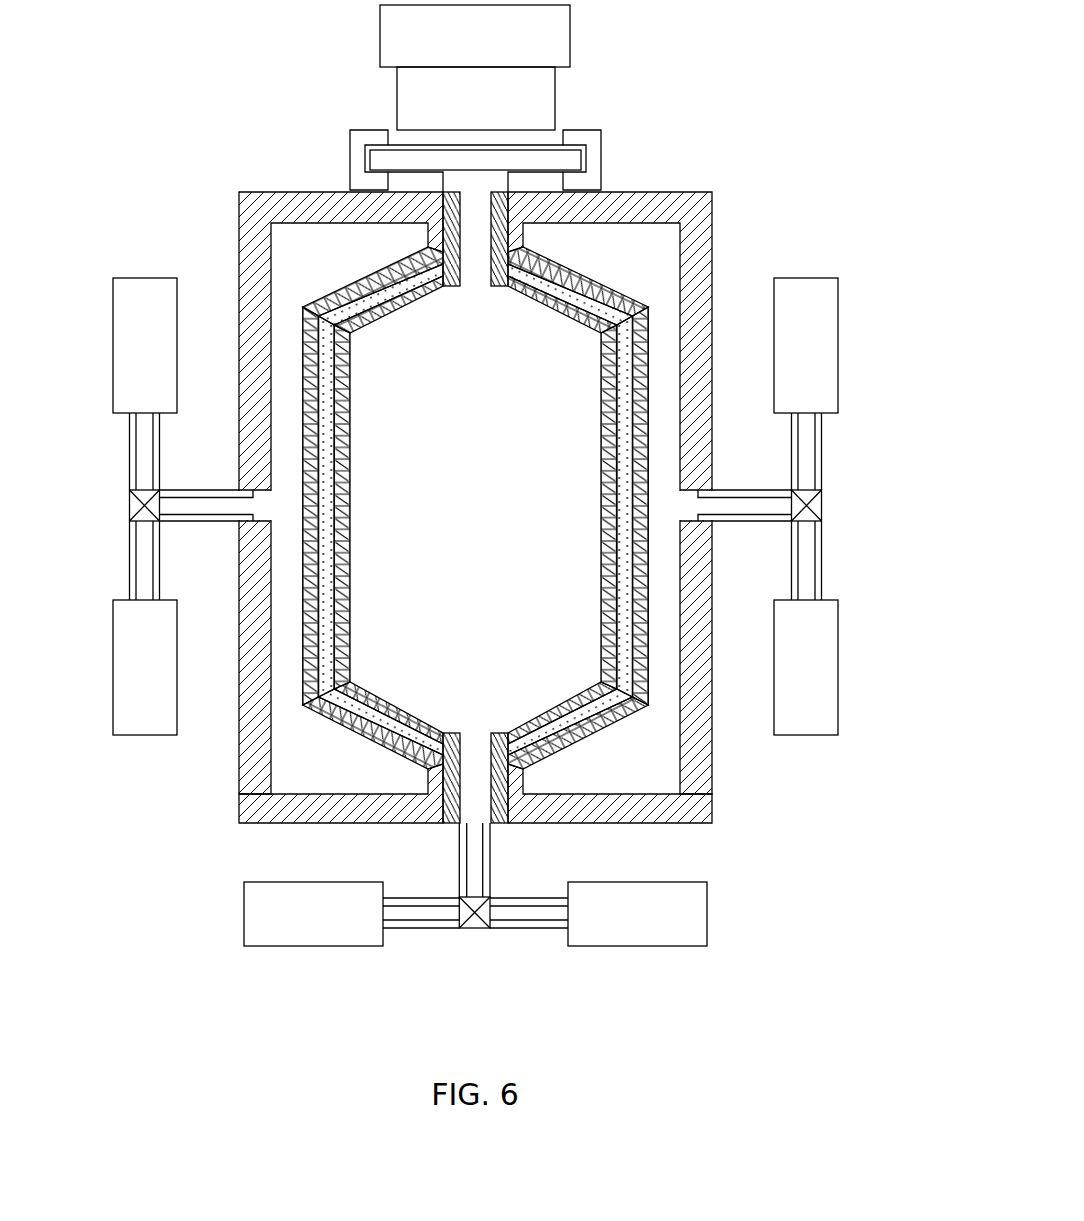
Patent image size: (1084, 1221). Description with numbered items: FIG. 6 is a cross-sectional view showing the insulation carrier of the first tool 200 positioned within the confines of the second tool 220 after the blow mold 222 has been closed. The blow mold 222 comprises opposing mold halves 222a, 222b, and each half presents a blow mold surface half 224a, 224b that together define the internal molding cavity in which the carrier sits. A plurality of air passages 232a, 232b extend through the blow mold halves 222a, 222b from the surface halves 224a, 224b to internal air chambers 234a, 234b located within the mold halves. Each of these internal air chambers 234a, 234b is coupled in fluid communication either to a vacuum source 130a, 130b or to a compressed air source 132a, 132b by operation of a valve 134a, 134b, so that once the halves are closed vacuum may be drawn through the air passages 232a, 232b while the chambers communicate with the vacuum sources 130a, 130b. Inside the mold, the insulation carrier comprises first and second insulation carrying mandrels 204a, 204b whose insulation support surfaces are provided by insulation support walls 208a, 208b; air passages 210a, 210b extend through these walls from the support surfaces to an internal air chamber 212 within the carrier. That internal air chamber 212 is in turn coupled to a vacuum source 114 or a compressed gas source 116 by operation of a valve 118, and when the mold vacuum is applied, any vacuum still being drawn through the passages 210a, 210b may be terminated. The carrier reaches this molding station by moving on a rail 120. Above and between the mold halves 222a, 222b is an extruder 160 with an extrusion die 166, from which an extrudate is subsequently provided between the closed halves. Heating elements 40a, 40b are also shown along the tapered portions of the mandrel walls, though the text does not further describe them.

The extruder 160 is at (475, 36).
The extrusion die 166 is at (476, 98).
The rail 120 is at (348, 121).
The second tool 220 is at (466, 456).
The blow mold 222 is at (466, 468).
The first blow mold half 222a is at (283, 499).
The second blow mold half 222b is at (669, 497).
The first internal air chamber 234a is at (293, 783).
The second internal air chamber 234b is at (657, 778).
The first tool 200 is at (435, 803).
The first insulation carrying mandrel 204a is at (372, 508).
The second insulation carrying mandrel 204b is at (575, 508).
The first heating element 40a is at (395, 285).
The second heating element 40b is at (563, 292).
The first insulation support wall 208a is at (347, 358).
The second insulation support wall 208b is at (600, 358).
The first air passages 210a is at (343, 420).
The second air passages 210b is at (607, 448).
The first blow mold surface half 224a is at (335, 655).
The second blow mold surface half 224b is at (631, 632).
The first blow mold air passages 232a is at (373, 735).
The second blow mold air passages 232b is at (578, 735).
The internal air chamber 212 is at (458, 516).
The first vacuum source 130a is at (145, 384).
The second vacuum source 130b is at (806, 384).
The first compressed air source 132a is at (145, 628).
The second compressed air source 132b is at (806, 628).
The first valve 134a is at (145, 517).
The second valve 134b is at (808, 525).
The compressed gas source 116 is at (351, 914).
The vacuum source 114 is at (598, 914).
The valve 118 is at (470, 927).